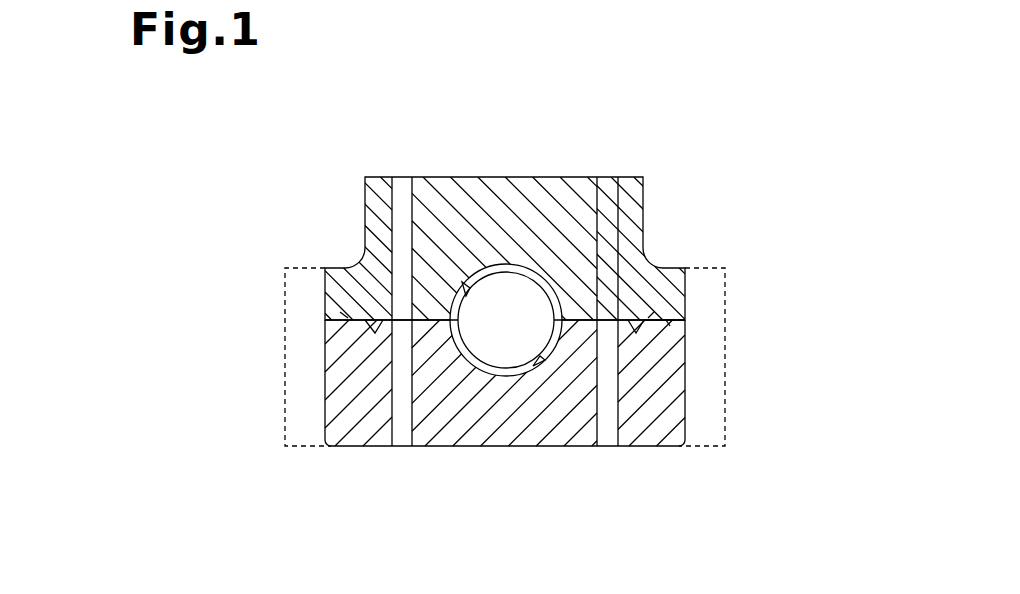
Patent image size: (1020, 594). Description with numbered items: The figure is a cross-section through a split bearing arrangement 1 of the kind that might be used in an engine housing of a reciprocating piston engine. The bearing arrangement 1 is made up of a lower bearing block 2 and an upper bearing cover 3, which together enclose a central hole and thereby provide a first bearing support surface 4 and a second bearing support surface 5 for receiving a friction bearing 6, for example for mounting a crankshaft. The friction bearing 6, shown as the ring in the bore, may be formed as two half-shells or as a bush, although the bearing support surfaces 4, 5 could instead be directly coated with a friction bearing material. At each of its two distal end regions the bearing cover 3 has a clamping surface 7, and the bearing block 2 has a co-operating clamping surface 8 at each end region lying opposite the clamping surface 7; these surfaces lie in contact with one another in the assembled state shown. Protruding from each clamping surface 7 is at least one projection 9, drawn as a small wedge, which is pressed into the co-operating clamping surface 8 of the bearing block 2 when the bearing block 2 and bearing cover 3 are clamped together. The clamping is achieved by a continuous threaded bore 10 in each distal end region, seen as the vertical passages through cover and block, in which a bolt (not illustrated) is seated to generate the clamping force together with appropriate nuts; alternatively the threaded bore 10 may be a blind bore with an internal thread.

The split bearing arrangement 1 is at (742, 140).
The bearing block 2 is at (672, 418).
The bearing cover 3 is at (548, 192).
The first bearing support surface 4 is at (484, 266).
The second bearing support surface 5 is at (537, 362).
The friction bearing 6 is at (348, 323).
The clamping surface 7 is at (656, 313).
The co-operating clamping surface 8 is at (671, 320).
The projection 9 is at (367, 342).
The threaded bore 10 is at (400, 177).